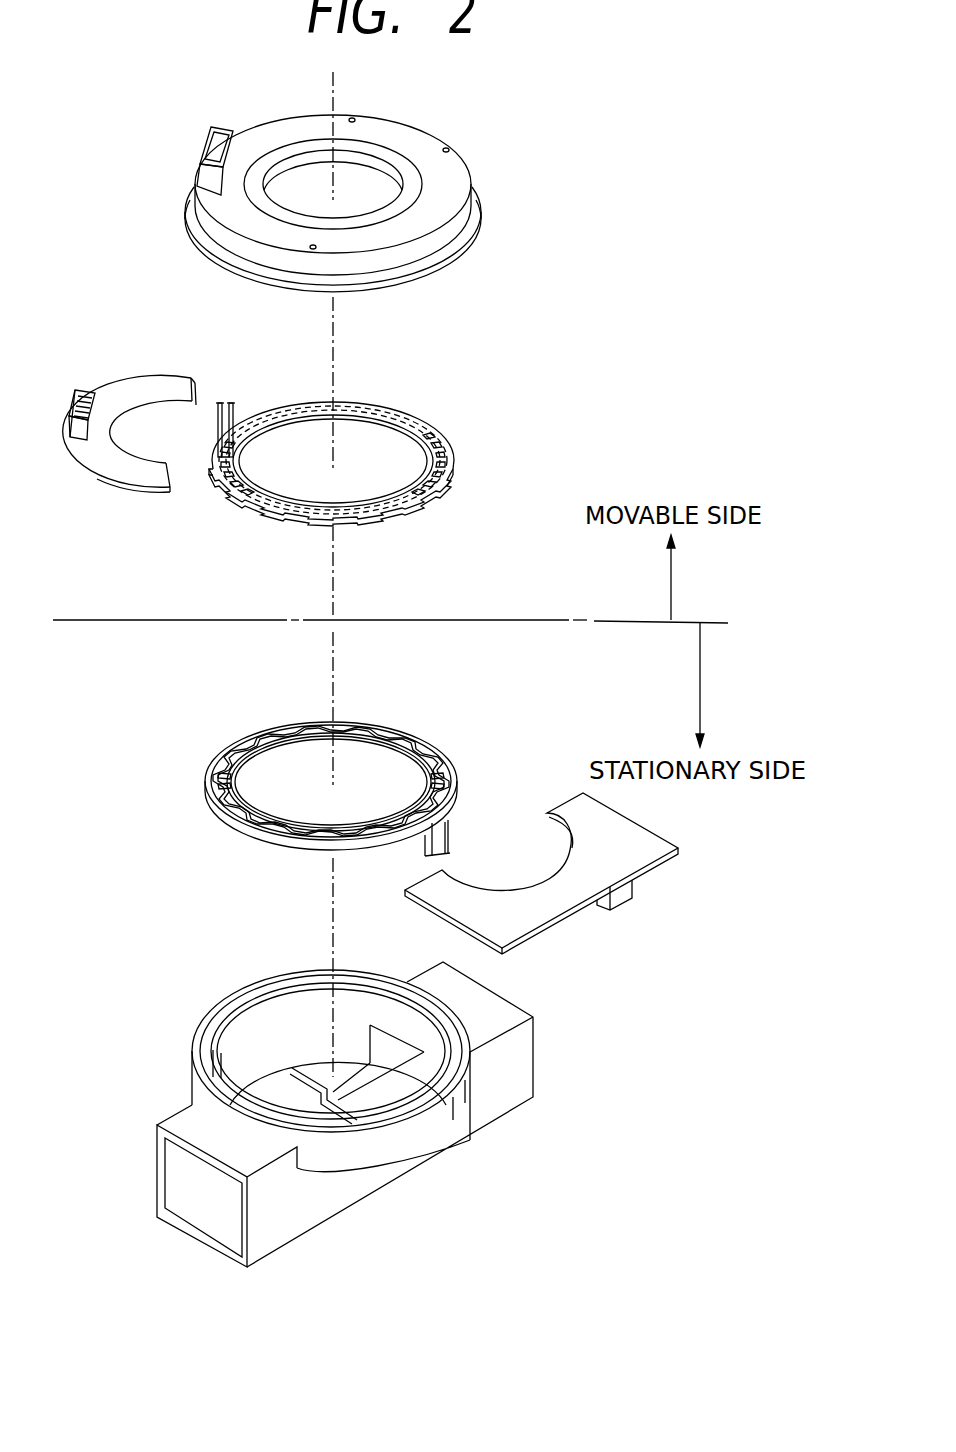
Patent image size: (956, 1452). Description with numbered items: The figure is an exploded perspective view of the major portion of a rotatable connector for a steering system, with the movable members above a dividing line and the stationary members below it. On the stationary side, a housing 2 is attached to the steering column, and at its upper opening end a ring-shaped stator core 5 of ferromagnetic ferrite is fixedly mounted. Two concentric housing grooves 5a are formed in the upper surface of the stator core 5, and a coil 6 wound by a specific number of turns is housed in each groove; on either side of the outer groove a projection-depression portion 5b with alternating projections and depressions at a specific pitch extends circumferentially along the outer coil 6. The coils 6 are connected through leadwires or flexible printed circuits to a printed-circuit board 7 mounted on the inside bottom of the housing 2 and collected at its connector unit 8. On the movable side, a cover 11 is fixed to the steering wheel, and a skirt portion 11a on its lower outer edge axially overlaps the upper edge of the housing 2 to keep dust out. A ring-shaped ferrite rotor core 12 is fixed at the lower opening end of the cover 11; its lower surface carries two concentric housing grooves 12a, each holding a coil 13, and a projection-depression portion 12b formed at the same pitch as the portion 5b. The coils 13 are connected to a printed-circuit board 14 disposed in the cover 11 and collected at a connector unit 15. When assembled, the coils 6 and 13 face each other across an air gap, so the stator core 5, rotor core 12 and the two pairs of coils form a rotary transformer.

The housing 2 is at (270, 1243).
The stator core 5 is at (210, 813).
The housing grooves 5a is at (270, 828).
The projection-depression portion 5b is at (397, 737).
The coil 6 is at (210, 775).
The printed-circuit board 7 is at (557, 907).
The connector unit 8 is at (620, 903).
The cover 11 is at (463, 178).
The skirt portion 11a is at (423, 278).
The rotor core 12 is at (455, 448).
The housing grooves 12a is at (370, 403).
The projection-depression portion 12b is at (390, 523).
The coil 13 is at (224, 490).
The printed-circuit board 14 is at (108, 473).
The connector unit 15 is at (87, 392).